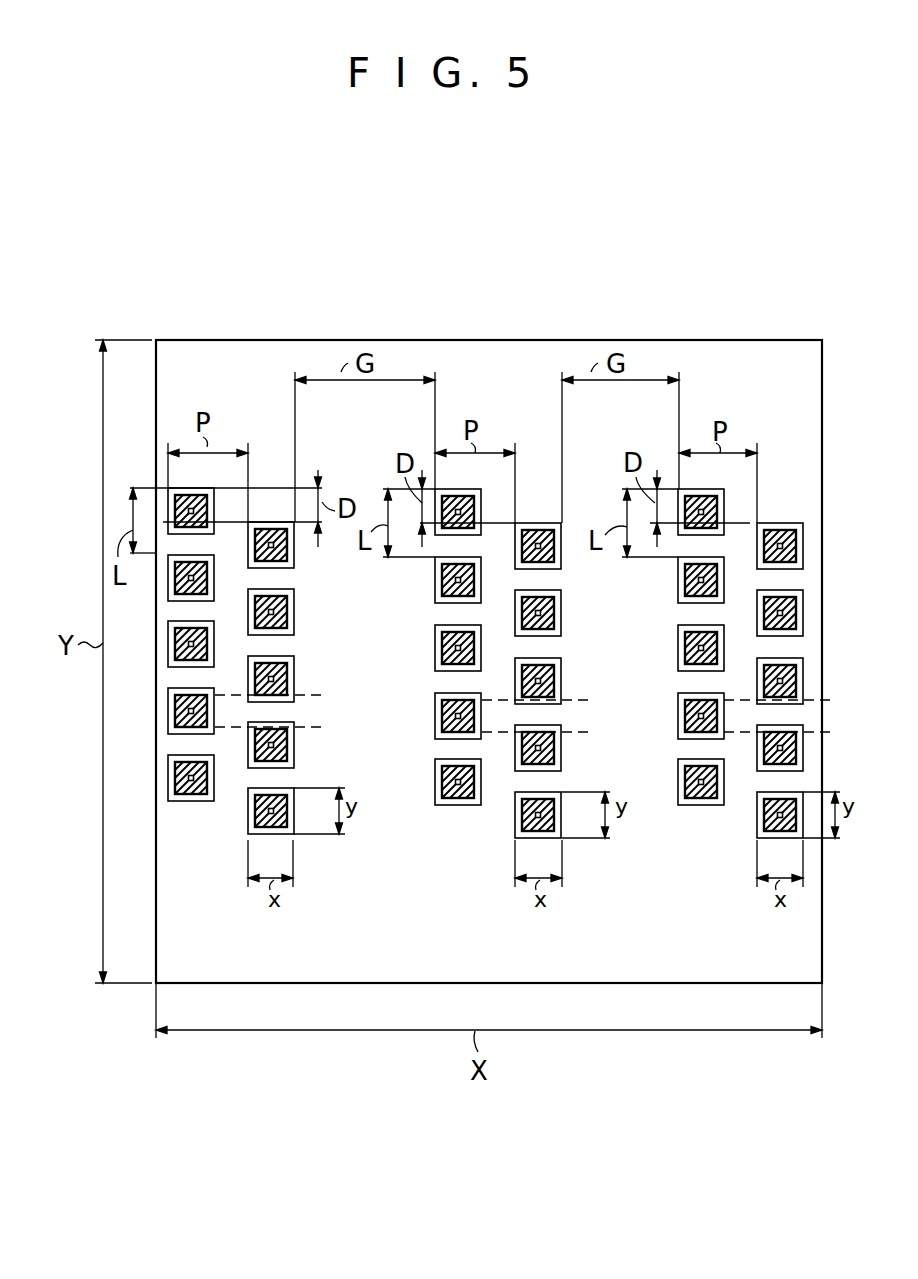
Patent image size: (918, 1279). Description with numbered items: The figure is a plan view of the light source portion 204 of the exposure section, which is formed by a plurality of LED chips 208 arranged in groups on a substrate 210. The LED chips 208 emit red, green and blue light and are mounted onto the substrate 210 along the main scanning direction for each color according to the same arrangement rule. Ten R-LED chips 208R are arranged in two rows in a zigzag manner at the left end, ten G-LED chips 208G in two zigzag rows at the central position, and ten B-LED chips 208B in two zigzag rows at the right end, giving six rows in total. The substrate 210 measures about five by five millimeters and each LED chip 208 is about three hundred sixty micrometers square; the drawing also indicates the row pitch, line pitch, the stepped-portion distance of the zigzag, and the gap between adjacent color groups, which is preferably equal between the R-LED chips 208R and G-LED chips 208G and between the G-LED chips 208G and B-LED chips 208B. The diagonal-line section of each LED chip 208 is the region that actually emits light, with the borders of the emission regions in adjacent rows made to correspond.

The light source portion 204 is at (268, 310).
The substrate 210 is at (572, 358).
The LED chips 208 is at (485, 731).
The R-LED chip 208R is at (295, 634).
The G-LED chip 208G is at (434, 734).
The B-LED chip 208B is at (702, 708).